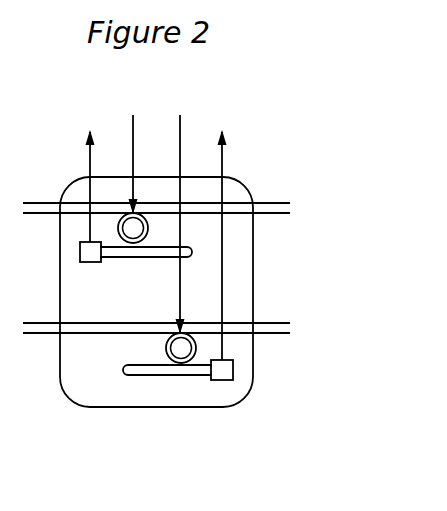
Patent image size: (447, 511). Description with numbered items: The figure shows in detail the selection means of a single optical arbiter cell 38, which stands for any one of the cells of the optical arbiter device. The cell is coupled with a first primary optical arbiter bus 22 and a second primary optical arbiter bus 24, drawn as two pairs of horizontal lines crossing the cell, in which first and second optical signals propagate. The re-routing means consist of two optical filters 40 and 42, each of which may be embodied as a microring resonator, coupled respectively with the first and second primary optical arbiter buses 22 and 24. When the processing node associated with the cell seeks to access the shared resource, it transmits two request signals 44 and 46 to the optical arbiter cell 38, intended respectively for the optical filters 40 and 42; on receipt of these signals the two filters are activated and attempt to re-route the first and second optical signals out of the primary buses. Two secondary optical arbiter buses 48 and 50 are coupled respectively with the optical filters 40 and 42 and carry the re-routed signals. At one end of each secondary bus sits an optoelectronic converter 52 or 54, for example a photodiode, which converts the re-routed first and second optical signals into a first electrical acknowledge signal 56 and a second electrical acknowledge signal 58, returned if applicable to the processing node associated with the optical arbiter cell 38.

The first primary optical arbiter bus 22 is at (290, 210).
The second primary optical arbiter bus 24 is at (290, 330).
The optical arbiter cell 38 is at (157, 407).
The optical filter 40 is at (148, 228).
The optical filter 42 is at (196, 348).
The request signal 44 is at (132, 149).
The request signal 46 is at (177, 209).
The secondary optical arbiter bus 48 is at (152, 253).
The secondary optical arbiter bus 50 is at (123, 370).
The optoelectronic converter 52 is at (80, 250).
The optoelectronic converter 54 is at (233, 370).
The first electrical acknowledge signal 56 is at (87, 174).
The second electrical acknowledge signal 58 is at (225, 233).